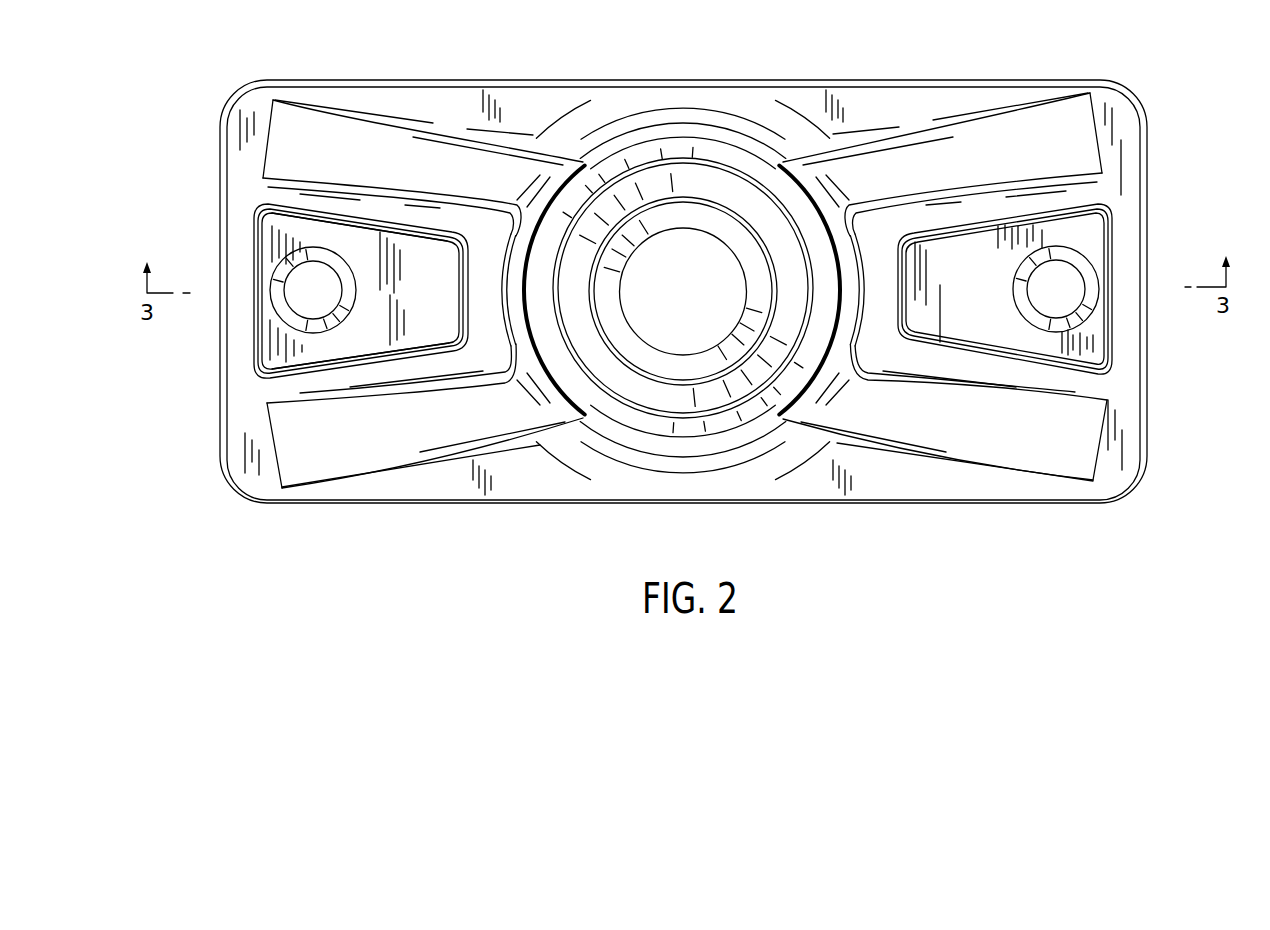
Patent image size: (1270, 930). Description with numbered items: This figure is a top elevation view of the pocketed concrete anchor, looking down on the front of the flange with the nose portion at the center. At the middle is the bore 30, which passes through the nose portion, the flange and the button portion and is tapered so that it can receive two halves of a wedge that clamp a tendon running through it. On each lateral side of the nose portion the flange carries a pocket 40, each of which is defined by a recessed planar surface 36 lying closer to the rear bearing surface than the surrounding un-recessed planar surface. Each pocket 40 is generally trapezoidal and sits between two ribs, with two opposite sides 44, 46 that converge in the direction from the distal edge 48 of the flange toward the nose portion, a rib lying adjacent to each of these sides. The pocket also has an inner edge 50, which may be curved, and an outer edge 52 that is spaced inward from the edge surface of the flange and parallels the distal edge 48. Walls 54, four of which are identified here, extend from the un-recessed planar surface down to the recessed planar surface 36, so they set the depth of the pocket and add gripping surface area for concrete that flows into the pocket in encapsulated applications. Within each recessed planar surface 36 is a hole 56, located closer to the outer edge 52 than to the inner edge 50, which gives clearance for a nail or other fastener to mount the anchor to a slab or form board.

The bore 30 is at (697, 302).
The recessed planar surface 36 is at (437, 322).
The pocket 40 is at (363, 328).
The side of the pocket 44 is at (288, 210).
The side of the pocket 46 is at (385, 362).
The distal edge of the flange 48 is at (228, 205).
The inner edge of the pocket 50 is at (447, 250).
The outer edge of the pocket 52 is at (253, 306).
The walls of the pocket 54 is at (917, 290).
The hole 56 is at (327, 302).